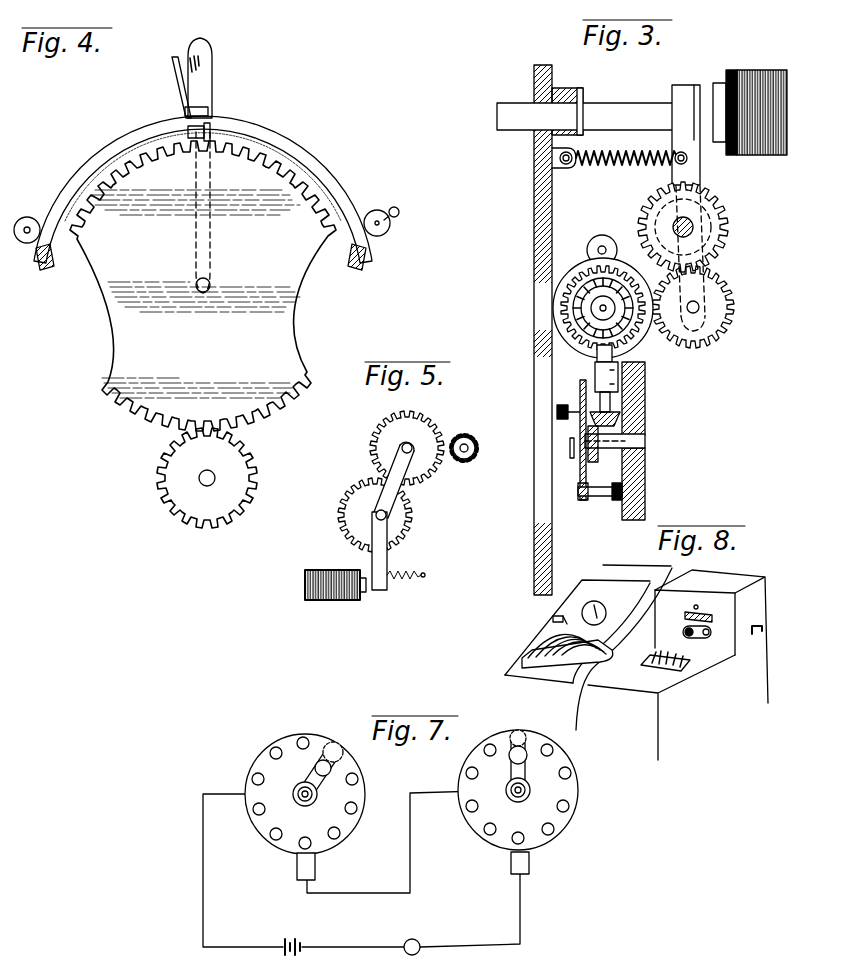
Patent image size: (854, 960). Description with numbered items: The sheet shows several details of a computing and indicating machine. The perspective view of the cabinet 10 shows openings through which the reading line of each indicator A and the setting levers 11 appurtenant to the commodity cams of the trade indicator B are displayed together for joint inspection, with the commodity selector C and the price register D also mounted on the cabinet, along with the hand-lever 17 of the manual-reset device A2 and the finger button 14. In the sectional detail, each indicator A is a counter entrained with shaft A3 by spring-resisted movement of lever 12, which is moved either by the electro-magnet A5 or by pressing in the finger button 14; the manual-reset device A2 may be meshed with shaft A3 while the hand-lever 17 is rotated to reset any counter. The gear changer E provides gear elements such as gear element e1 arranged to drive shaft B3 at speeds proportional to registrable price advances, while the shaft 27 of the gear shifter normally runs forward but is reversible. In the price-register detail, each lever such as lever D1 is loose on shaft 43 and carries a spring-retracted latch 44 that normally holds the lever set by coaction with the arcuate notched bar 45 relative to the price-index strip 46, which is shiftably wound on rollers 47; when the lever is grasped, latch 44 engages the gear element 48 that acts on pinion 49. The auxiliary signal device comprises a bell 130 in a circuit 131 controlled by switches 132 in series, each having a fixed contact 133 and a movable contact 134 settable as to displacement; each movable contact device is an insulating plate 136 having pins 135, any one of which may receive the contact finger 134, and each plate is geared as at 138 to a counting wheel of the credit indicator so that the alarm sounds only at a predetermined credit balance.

In FIG. 4, the spring-retracted latch 44 is at (180, 88).
In FIG. 4, the lever D1 is at (210, 80).
In FIG. 8, the lever D1 is at (540, 652).
In FIG. 4, the arcuate notched bar 45 is at (266, 134).
In FIG. 4, the price-index strip 46 is at (352, 202).
In FIG. 4, the rollers 47 is at (390, 226).
In FIG. 4, the shaft 43 is at (210, 283).
In FIG. 4, the gear element 48 is at (300, 262).
In FIG. 4, the pinion 49 is at (245, 480).
In FIG. 3, the finger button 14 is at (516, 125).
In FIG. 8, the finger button 14 is at (698, 605).
In FIG. 3, the electro-magnet A5 is at (762, 58).
In FIG. 3, the lever 12 is at (690, 170).
In FIG. 3, the shaft A3 is at (692, 223).
In FIG. 3, the indicator A is at (580, 262).
In FIG. 8, the indicator A is at (712, 618).
In FIG. 3, the gearing 138 is at (596, 368).
In FIG. 3, the movable contact 134 is at (576, 428).
In FIG. 7, the movable contact 134 is at (316, 760).
In FIG. 3, the switch 132 is at (580, 462).
In FIG. 8, the switch 132 is at (695, 640).
In FIG. 7, the switch 132 is at (355, 788).
In FIG. 3, the pins 135 is at (583, 496).
In FIG. 7, the pins 135 is at (352, 810).
In FIG. 5, the gear element e1 is at (462, 433).
In FIG. 5, the shaft B3 is at (464, 453).
In FIG. 5, the gear changer E is at (367, 469).
In FIG. 5, the shaft of the gear shifter 27 is at (386, 515).
In FIG. 8, the cabinet 10 is at (648, 692).
In FIG. 8, the hand-lever 17 is at (763, 631).
In FIG. 8, the manual-reset device A2 is at (752, 636).
In FIG. 8, the trade indicator B is at (688, 668).
In FIG. 8, the setting levers 11 is at (665, 668).
In FIG. 7, the setting levers 11 is at (451, 952).
In FIG. 8, the switch G is at (560, 614).
In FIG. 8, the commodity selector C is at (604, 607).
In FIG. 8, the price register D is at (598, 651).
In FIG. 7, the insulating plate 136 is at (258, 765).
In FIG. 7, the fixed contact 133 is at (315, 866).
In FIG. 7, the circuit 131 is at (358, 928).
In FIG. 7, the bell 130 is at (418, 940).